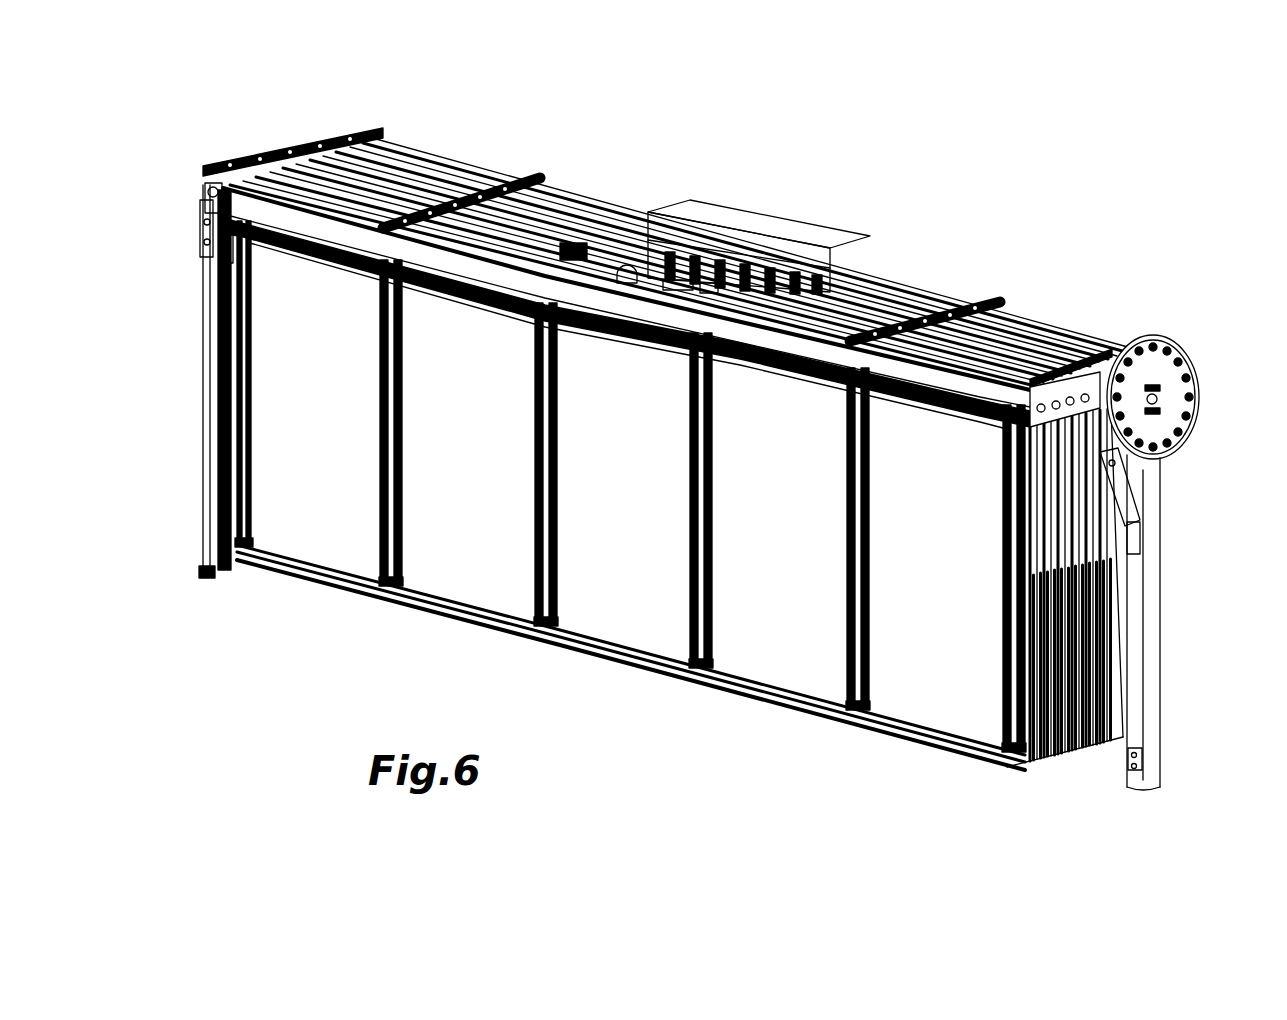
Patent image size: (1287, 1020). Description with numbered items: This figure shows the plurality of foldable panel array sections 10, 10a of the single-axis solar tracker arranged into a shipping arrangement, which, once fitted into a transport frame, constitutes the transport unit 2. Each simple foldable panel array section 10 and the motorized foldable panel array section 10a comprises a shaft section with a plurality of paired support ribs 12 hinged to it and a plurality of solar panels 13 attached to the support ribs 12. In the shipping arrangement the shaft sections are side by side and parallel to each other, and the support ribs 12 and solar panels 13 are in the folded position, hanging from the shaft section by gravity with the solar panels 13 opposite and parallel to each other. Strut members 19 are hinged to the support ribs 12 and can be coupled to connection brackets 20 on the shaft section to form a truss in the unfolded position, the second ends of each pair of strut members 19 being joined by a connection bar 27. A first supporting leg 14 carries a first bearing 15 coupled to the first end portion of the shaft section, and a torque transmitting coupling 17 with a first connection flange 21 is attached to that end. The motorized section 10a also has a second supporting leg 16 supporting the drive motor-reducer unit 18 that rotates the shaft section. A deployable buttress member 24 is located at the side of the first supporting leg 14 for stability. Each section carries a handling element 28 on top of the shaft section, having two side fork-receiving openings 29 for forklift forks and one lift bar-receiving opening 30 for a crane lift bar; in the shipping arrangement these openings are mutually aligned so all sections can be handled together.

The transport unit 2 is at (782, 138).
The foldable panel array section 10 is at (368, 184).
The motorized foldable panel array section 10a is at (1000, 318).
The support ribs 12 is at (251, 470).
The solar panels 13 is at (288, 406).
The first supporting leg 14 is at (222, 425).
The first bearing 15 is at (207, 202).
The second supporting leg 16 is at (1153, 620).
The torque transmitting coupling 17 is at (210, 188).
The drive motor-reducer unit 18 is at (1196, 384).
The strut members 19 is at (240, 524).
The connection brackets 20 is at (520, 174).
The first connection flange 21 is at (213, 164).
The buttress member 24 is at (209, 396).
The connection bar 27 is at (250, 570).
The handling element 28 is at (794, 233).
The side fork-receiving openings 29 is at (624, 262).
The lift bar-receiving opening 30 is at (678, 280).